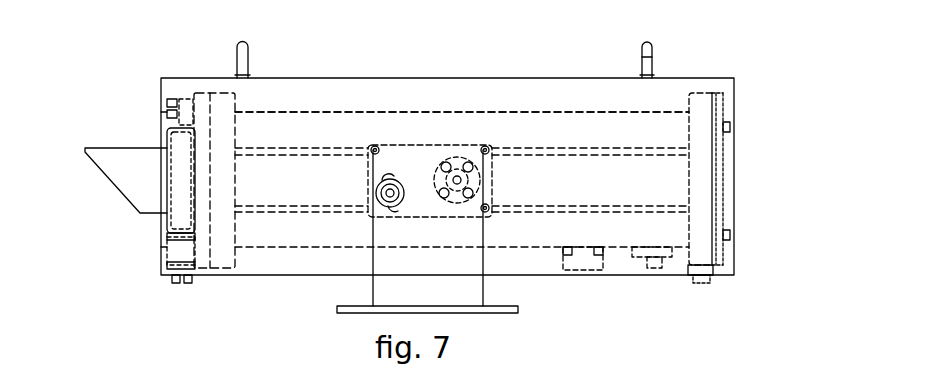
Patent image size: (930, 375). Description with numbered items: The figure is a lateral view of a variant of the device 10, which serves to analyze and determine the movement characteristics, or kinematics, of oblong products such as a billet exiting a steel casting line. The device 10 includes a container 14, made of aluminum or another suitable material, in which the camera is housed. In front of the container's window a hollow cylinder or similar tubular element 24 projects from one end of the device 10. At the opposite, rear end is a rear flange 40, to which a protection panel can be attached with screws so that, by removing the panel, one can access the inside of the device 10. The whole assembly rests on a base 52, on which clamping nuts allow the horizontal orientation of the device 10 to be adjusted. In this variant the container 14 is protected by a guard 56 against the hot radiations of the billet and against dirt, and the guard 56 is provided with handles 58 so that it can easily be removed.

The device 10 is at (576, 57).
The container 14 is at (350, 112).
The tubular element 24 is at (123, 160).
The rear flange 40 is at (697, 108).
The base 52 is at (518, 310).
The guard 56 is at (318, 98).
The handles 58 is at (650, 56).